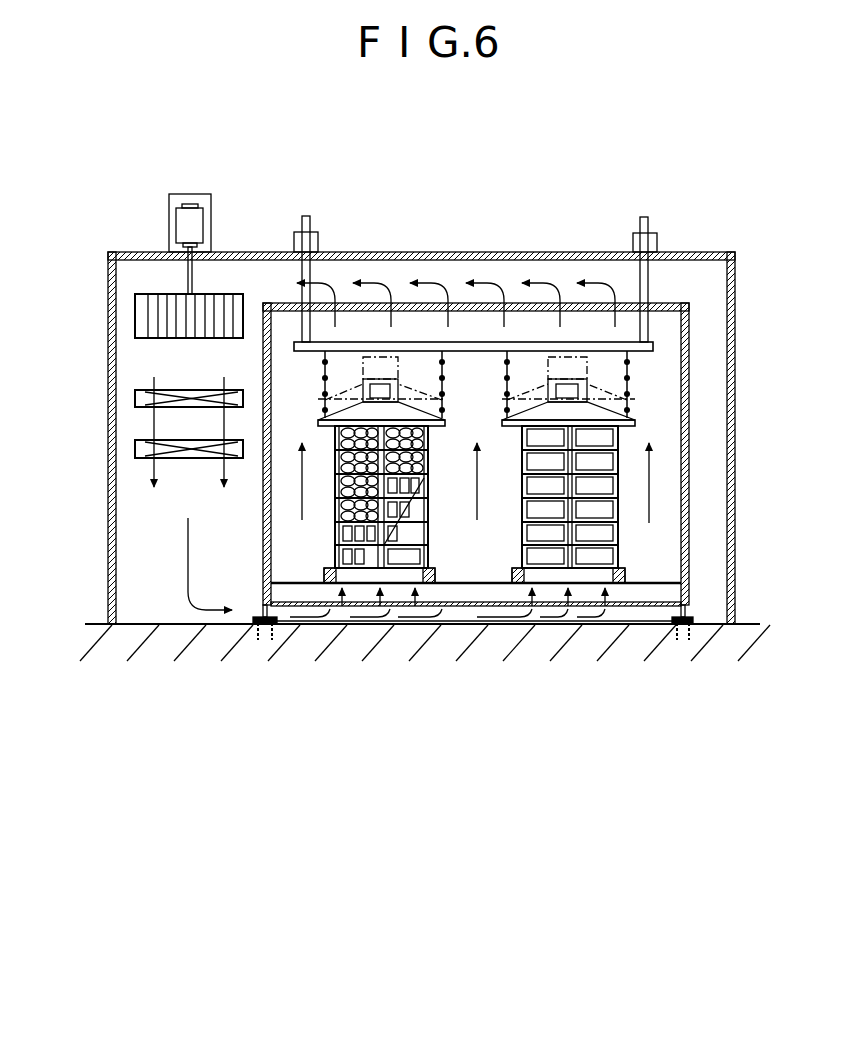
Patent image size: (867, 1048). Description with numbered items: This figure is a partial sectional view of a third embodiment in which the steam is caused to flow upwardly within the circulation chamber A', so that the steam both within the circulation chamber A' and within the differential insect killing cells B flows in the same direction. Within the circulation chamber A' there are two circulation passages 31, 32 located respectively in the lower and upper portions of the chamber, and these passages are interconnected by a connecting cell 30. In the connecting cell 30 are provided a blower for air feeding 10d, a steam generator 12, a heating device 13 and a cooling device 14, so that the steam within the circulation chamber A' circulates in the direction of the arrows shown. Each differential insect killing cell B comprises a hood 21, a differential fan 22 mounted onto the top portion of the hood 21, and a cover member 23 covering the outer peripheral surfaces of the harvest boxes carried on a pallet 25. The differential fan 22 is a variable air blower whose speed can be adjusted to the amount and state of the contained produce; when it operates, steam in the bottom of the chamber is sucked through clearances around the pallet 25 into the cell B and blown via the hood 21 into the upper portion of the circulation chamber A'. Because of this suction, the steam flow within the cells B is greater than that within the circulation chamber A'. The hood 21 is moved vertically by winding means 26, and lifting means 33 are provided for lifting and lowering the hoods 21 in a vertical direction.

The blower for air feeding 10d is at (140, 312).
The steam generator 12 is at (137, 397).
The heating device 13 is at (140, 452).
The cooling device 14 is at (137, 446).
The hood 21 is at (430, 412).
The differential fan 22 is at (400, 388).
The cover member 23 is at (495, 590).
The pallet 25 is at (437, 573).
The winding means 26 is at (325, 372).
The connecting cell 30 is at (135, 525).
The circulation passage 31 is at (345, 620).
The circulation passage 32 is at (408, 272).
The lifting means 33 is at (310, 277).
The circulation chamber A' is at (421, 404).
The differential insect killing cell B is at (440, 470).